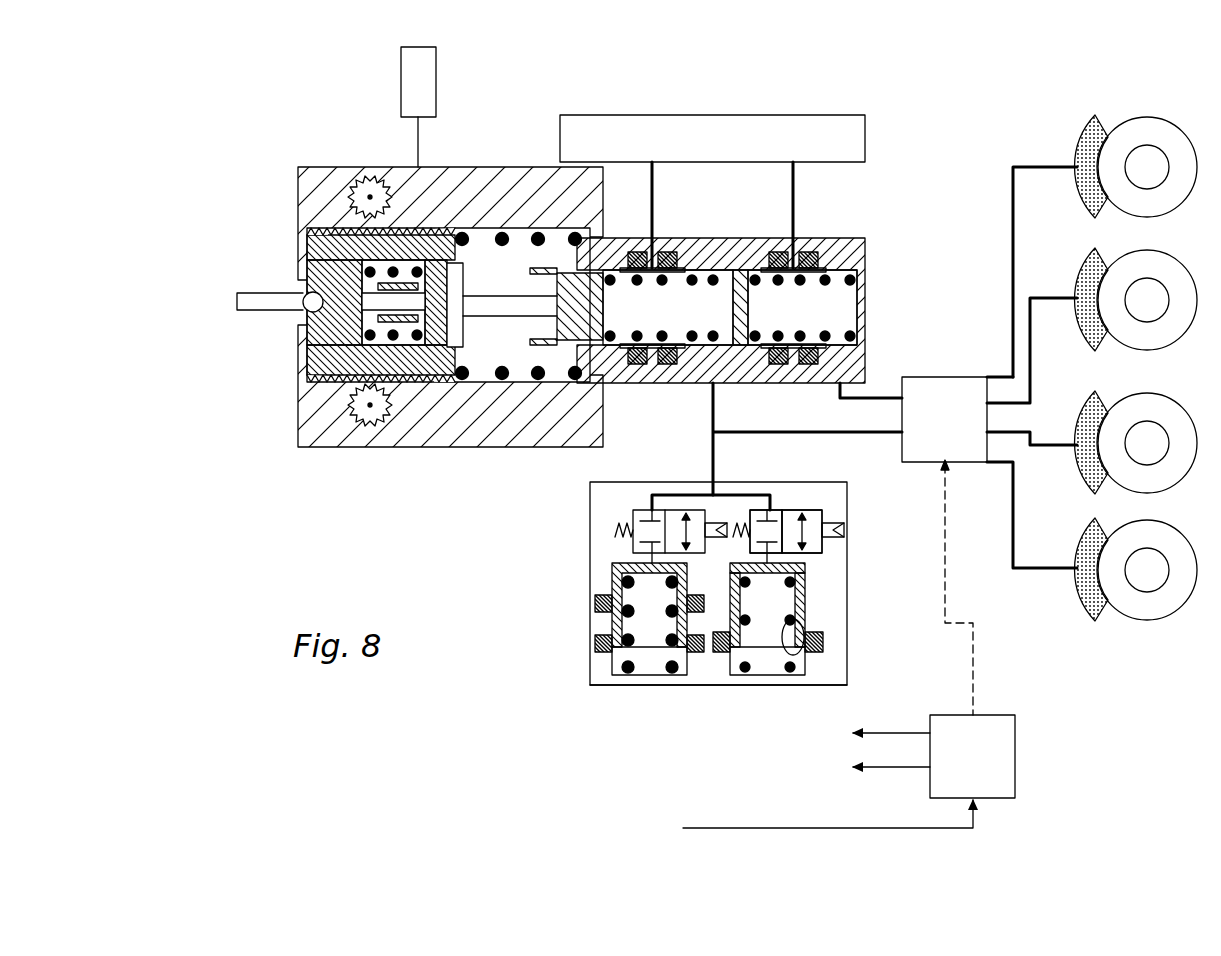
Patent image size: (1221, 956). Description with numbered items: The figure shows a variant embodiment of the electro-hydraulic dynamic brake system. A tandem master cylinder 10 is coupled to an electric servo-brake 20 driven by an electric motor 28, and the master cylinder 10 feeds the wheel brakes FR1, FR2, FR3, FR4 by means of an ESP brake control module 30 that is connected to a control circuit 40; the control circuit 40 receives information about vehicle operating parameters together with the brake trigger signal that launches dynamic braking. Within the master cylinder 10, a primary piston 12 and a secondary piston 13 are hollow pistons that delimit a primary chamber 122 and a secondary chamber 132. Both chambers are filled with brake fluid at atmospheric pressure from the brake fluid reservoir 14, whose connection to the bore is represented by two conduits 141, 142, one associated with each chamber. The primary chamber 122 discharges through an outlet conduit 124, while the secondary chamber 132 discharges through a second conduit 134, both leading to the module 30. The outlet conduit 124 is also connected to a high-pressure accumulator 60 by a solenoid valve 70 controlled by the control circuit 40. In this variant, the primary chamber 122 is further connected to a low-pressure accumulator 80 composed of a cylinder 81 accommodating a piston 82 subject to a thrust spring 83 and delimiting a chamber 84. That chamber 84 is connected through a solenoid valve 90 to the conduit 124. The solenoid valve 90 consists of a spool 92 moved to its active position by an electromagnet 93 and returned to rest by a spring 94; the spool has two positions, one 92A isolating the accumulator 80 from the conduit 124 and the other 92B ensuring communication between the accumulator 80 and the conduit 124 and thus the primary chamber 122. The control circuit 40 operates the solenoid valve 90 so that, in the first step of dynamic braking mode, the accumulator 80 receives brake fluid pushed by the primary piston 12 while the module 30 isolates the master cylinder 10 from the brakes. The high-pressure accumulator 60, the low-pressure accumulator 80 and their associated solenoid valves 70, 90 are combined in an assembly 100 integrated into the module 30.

The tandem master cylinder 10 is at (867, 255).
The primary piston 12 is at (566, 306).
The secondary piston 13 is at (732, 309).
The brake fluid reservoir 14 is at (721, 150).
The electric servo-brake 20 is at (327, 163).
The electric motor 28 is at (417, 66).
The ESP brake control module 30 is at (953, 425).
The control circuit 40 is at (981, 766).
The high-pressure accumulator 60 is at (609, 570).
The solenoid valve 70 is at (620, 507).
The low-pressure accumulator 80 is at (819, 623).
The cylinder 81 is at (807, 584).
The piston 82 is at (791, 622).
The thrust spring 83 is at (796, 653).
The chamber 84 is at (797, 572).
The solenoid valve 90 is at (848, 505).
The spool 92 is at (813, 498).
The isolating position 92A is at (778, 512).
The communicating position 92B is at (812, 518).
The electromagnet 93 is at (846, 547).
The spring 94 is at (723, 540).
The assembly 100 is at (710, 668).
The primary chamber 122 is at (684, 318).
The outlet conduit 124 is at (711, 410).
The secondary chamber 132 is at (817, 318).
The outlet conduit of secondary chamber 134 is at (839, 398).
The conduit 141 is at (655, 188).
The conduit 142 is at (796, 188).
The wheel brake FR1 is at (1105, 246).
The wheel brake FR2 is at (1092, 325).
The wheel brake FR3 is at (1092, 442).
The wheel brake FR4 is at (1092, 541).